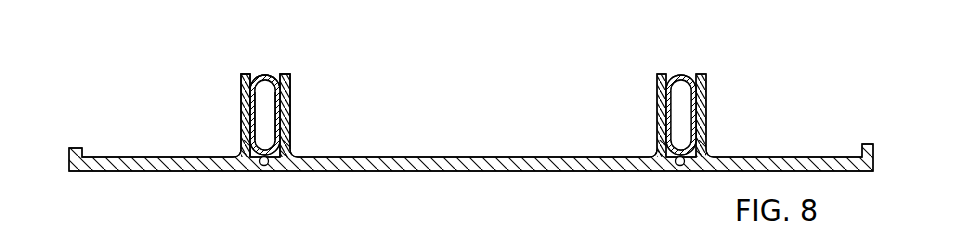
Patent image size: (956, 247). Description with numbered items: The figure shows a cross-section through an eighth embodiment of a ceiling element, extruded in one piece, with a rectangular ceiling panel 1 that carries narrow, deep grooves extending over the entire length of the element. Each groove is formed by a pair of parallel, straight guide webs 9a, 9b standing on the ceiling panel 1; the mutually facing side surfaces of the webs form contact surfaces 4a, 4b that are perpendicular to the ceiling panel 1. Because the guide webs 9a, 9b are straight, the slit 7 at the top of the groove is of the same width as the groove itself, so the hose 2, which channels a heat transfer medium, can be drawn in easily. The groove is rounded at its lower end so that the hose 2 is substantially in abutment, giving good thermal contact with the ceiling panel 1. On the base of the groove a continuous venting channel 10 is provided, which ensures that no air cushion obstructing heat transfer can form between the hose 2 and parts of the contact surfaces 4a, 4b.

The ceiling panel 1 is at (491, 157).
The hose 2 is at (259, 75).
The slit 7 is at (271, 76).
The guide web 9a is at (243, 91).
The guide web 9b is at (289, 91).
The contact surface 4a is at (251, 123).
The contact surface 4b is at (281, 123).
The venting channel 10 is at (263, 168).